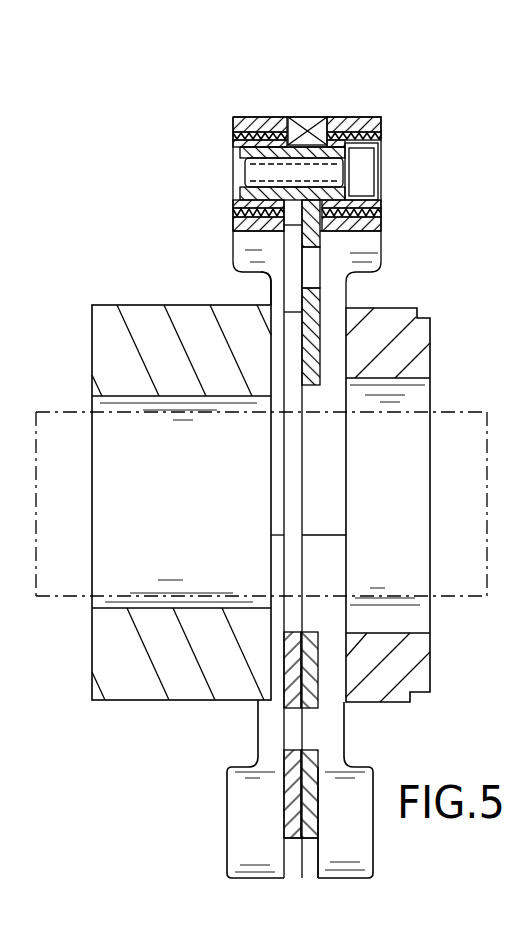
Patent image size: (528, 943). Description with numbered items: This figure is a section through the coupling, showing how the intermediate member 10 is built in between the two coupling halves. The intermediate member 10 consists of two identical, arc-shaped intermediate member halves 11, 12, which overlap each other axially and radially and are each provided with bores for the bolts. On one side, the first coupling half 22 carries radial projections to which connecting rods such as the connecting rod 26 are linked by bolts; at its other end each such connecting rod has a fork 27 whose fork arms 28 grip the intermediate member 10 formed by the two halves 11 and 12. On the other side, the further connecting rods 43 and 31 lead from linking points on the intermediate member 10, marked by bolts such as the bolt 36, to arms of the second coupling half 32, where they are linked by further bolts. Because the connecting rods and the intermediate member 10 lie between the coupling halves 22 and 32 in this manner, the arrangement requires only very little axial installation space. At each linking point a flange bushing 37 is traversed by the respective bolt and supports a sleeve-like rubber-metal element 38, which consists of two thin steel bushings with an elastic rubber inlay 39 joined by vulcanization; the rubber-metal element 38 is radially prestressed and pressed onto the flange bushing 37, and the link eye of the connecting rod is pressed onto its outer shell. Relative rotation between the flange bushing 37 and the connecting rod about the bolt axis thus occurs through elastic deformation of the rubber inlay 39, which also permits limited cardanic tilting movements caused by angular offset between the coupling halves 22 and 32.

The intermediate member 10 is at (343, 255).
The intermediate member half 11 is at (320, 325).
The intermediate member half 12 is at (288, 698).
The first coupling half 22 is at (403, 350).
The connecting rod 26 is at (272, 294).
The fork 27 is at (383, 122).
The fork arms 28 is at (372, 257).
The connecting rod 31 is at (238, 116).
The second coupling half 32 is at (125, 335).
The bolt 36 is at (346, 126).
The flange bushing 37 is at (268, 148).
The rubber-metal element 38 is at (233, 135).
The elastic rubber inlay 39 is at (236, 217).
The connecting rod 43 is at (330, 728).